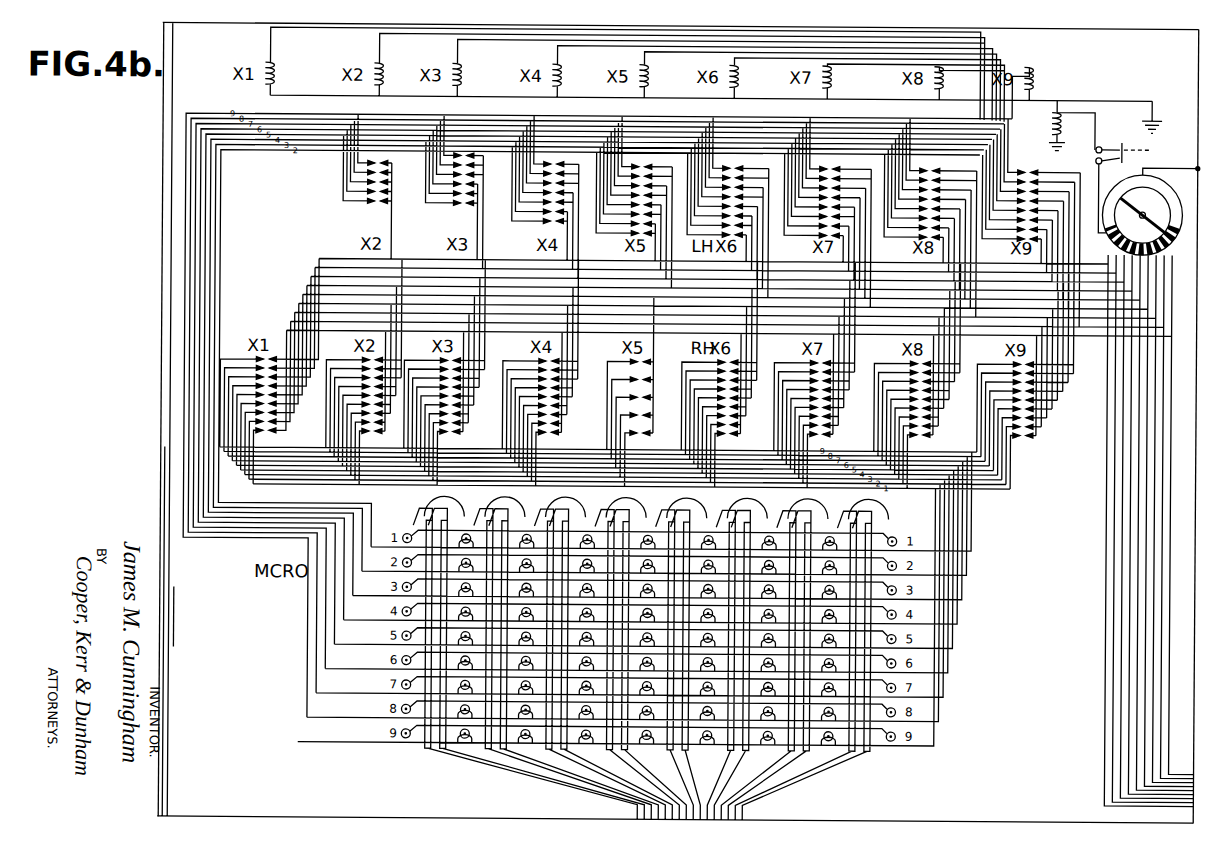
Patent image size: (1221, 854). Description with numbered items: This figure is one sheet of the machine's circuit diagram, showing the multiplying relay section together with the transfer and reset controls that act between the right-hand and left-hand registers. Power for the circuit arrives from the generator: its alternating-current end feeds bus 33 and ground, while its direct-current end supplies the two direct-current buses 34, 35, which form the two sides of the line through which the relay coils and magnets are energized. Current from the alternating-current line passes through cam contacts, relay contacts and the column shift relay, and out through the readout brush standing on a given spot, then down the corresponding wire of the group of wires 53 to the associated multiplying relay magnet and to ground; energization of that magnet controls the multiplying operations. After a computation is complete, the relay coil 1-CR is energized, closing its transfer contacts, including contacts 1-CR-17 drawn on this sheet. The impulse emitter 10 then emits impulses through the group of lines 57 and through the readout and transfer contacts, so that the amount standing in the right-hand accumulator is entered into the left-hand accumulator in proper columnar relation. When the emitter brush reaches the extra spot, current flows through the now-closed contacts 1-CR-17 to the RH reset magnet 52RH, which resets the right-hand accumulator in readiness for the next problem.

The impulse emitter 10 is at (1160, 190).
The A. C. bus 33 is at (1196, 75).
The D. C. bus 34 is at (170, 618).
The D. C. bus 35 is at (171, 640).
The group of wires 53 is at (998, 38).
The group of lines 57 is at (1130, 678).
The RH reset magnet 52RH is at (1060, 125).
The relay coil 1-CR is at (1140, 153).
The relay contacts 1-CR-17 is at (1097, 162).